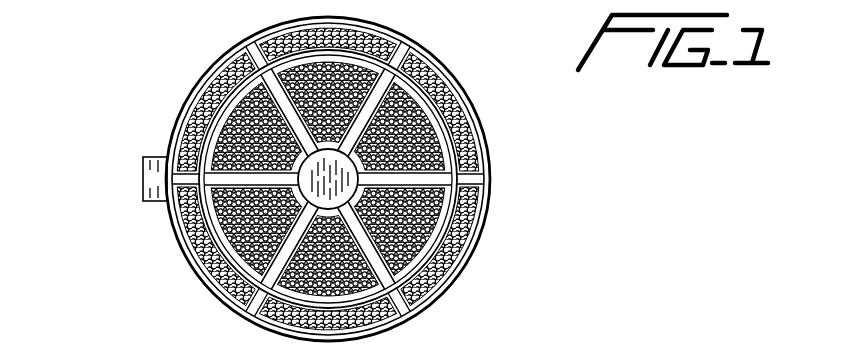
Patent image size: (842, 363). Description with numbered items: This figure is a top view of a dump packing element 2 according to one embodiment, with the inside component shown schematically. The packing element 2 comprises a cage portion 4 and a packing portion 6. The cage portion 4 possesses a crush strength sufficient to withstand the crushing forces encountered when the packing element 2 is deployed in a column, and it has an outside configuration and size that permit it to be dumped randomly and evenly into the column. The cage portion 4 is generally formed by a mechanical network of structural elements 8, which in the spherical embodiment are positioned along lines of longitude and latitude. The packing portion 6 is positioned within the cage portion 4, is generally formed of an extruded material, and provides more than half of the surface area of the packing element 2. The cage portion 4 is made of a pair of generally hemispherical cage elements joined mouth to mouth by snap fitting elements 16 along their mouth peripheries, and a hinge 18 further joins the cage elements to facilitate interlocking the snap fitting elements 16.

The packing element 2 is at (494, 91).
The cage portion 4 is at (490, 209).
The packing portion 6 is at (457, 250).
The structural elements 8 is at (218, 300).
The snap fitting elements 16 is at (413, 60).
The hinge 18 is at (143, 157).